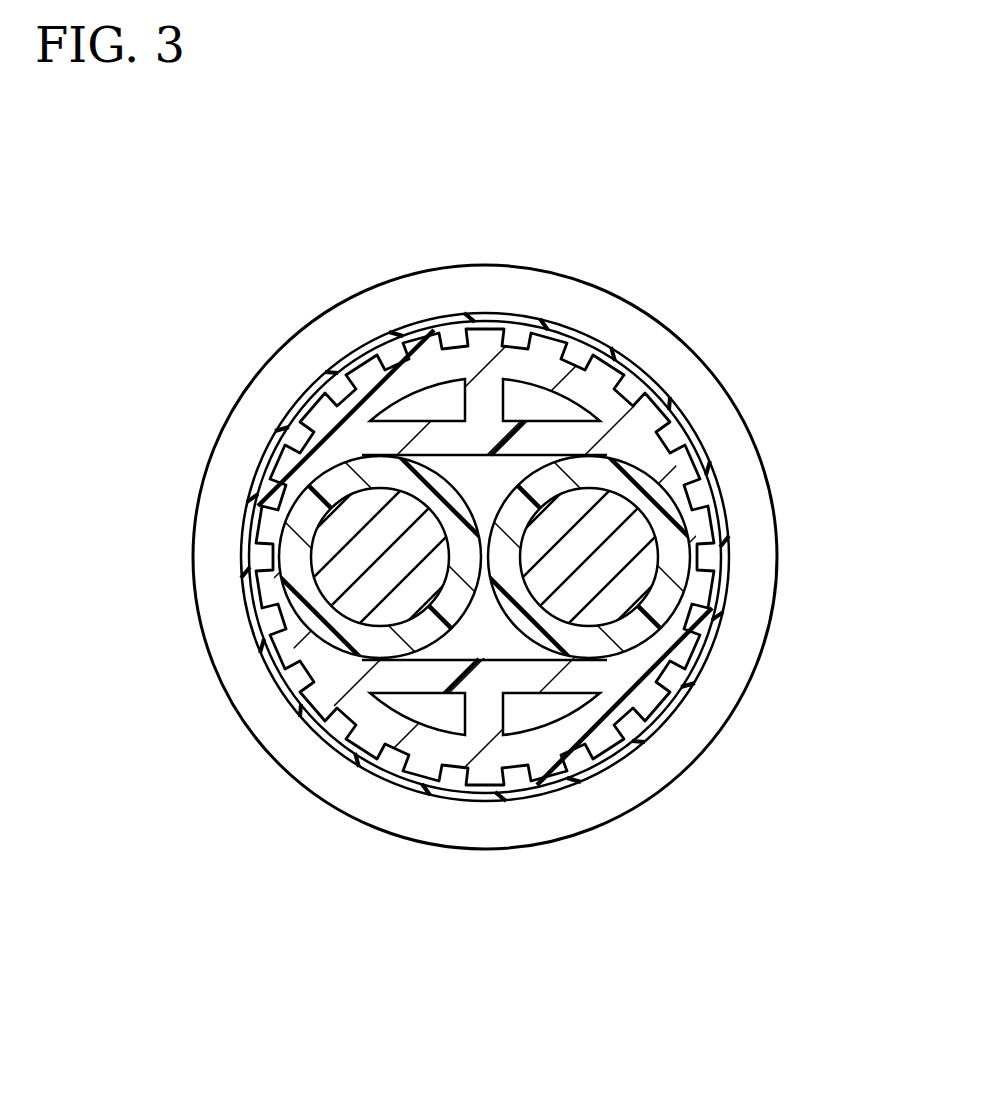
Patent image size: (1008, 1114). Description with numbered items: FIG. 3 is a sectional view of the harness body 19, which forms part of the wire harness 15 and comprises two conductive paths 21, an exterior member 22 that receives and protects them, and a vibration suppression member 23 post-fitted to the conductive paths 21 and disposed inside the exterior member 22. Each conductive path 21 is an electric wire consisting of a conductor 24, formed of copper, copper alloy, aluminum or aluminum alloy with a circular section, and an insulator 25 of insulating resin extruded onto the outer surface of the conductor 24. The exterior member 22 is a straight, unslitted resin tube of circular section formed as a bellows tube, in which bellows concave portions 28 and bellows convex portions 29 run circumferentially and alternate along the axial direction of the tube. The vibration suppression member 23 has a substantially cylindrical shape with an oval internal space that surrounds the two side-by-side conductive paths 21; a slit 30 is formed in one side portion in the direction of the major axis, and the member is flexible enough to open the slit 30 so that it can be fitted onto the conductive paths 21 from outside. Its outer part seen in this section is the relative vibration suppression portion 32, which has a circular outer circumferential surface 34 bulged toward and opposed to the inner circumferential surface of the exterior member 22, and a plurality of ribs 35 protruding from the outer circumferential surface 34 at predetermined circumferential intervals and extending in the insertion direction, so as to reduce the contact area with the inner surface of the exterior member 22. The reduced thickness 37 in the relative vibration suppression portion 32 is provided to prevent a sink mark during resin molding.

The wire harness 15 is at (170, 293).
The harness body 19 is at (170, 365).
The conductive path 21 is at (712, 626).
The exterior member 22 is at (722, 372).
The vibration suppression member 23 is at (688, 462).
The conductor 24 is at (357, 598).
The insulator 25 is at (327, 617).
The bellows concave portion 28 is at (505, 802).
The bellows convex portion 29 is at (560, 842).
The slit 30 is at (277, 572).
The relative vibration suppression portion 32 is at (262, 468).
The outer circumferential surface 34 is at (322, 413).
The rib 35 is at (325, 372).
The reduced thickness 37 is at (535, 406).